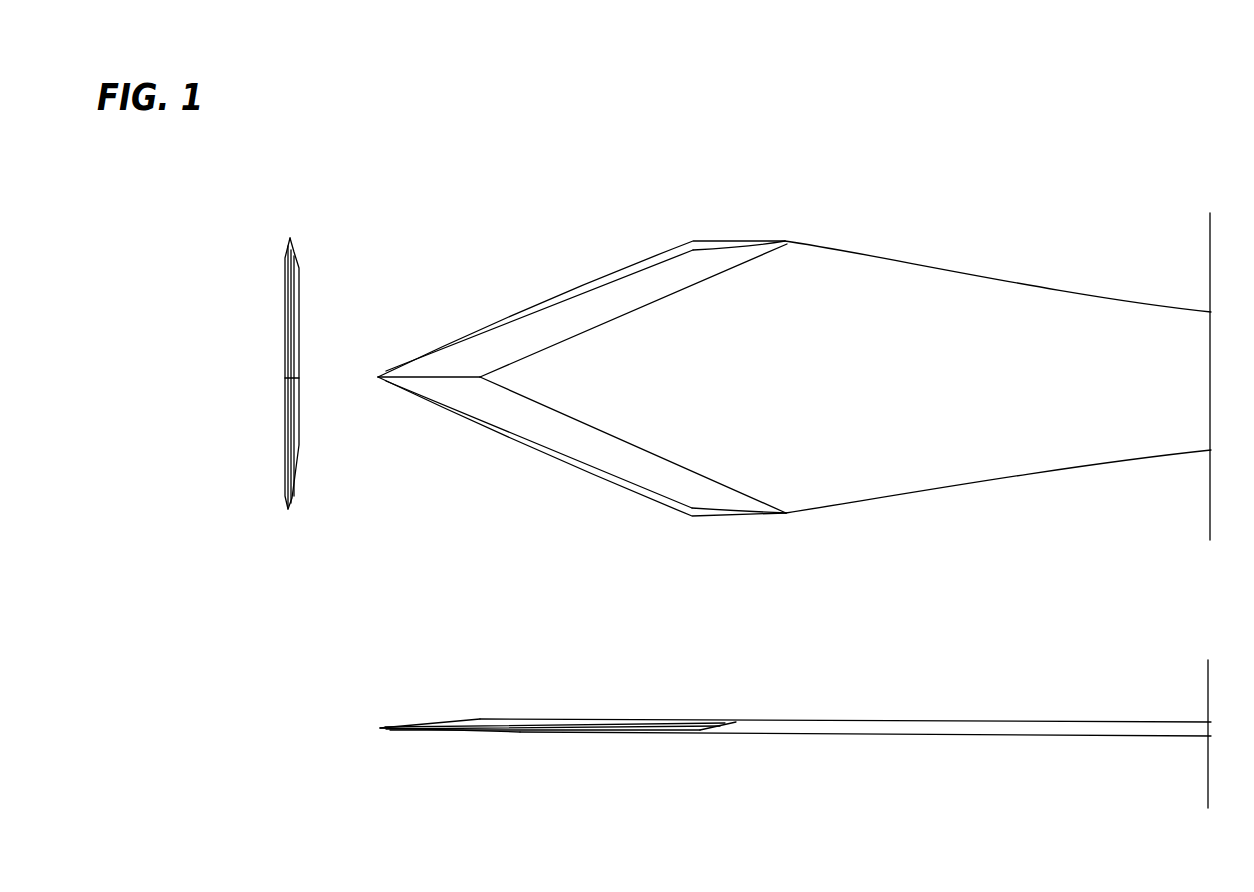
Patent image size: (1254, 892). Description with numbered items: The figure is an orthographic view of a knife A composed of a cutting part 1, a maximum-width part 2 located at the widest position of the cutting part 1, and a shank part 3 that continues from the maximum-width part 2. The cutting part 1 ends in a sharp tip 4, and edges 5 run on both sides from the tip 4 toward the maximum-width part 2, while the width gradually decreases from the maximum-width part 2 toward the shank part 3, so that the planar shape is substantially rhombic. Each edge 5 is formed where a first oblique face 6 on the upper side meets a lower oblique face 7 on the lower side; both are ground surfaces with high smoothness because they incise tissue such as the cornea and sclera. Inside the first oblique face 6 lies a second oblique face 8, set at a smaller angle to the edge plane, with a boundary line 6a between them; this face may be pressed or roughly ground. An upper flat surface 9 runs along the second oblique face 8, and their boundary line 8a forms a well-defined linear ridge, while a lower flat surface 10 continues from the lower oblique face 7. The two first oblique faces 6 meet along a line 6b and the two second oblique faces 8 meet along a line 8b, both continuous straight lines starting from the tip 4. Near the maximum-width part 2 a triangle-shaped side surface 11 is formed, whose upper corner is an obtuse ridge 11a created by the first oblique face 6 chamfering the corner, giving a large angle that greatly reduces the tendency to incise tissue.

The cutting part 1 is at (565, 250).
The maximum-width part 2 is at (291, 228).
The shank part 3 is at (873, 365).
The tip 4 is at (285, 378).
The edge 5 is at (285, 305).
The first oblique face 6 is at (296, 248).
The boundary line 6a is at (299, 293).
The line 6b is at (390, 382).
The lower oblique face 7 is at (290, 242).
The second oblique face 8 is at (298, 265).
The boundary line 8a is at (668, 294).
The line 8b is at (447, 377).
The upper flat surface 9 is at (299, 352).
The lower flat surface 10 is at (286, 430).
The side surface 11 is at (733, 241).
The ridge 11a is at (748, 241).
The knife A is at (1052, 264).